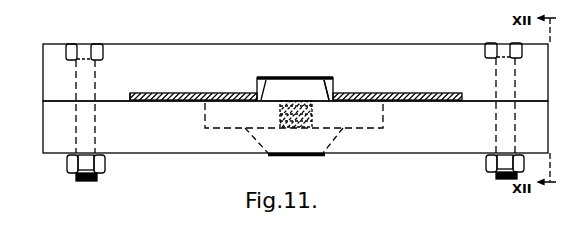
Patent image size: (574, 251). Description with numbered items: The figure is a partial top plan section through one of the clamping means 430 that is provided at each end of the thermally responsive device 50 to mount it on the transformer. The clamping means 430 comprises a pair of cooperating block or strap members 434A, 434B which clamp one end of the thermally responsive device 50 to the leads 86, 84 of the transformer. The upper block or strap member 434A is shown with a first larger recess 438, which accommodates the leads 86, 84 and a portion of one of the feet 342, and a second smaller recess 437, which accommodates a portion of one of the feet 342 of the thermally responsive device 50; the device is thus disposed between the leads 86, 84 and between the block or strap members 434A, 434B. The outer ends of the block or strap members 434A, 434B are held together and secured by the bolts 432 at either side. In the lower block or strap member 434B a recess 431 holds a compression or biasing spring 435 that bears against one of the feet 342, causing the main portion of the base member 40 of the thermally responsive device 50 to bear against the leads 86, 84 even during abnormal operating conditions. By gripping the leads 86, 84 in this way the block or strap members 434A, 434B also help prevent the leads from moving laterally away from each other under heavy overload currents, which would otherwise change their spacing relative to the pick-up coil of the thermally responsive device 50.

The bolts 432 is at (85, 43).
The clamping means 430 is at (143, 178).
The block or strap member 434A is at (257, 49).
The block or strap member 434B is at (424, 146).
The lead 84 is at (181, 92).
The lead 86 is at (392, 92).
The first larger recess 438 is at (195, 105).
The feet 342 is at (294, 86).
The second smaller recess 437 is at (338, 88).
The recess 431 is at (279, 113).
The compression or biasing spring 435 is at (313, 113).
The thermally responsive device 50 is at (253, 178).
The base member 40 is at (332, 161).